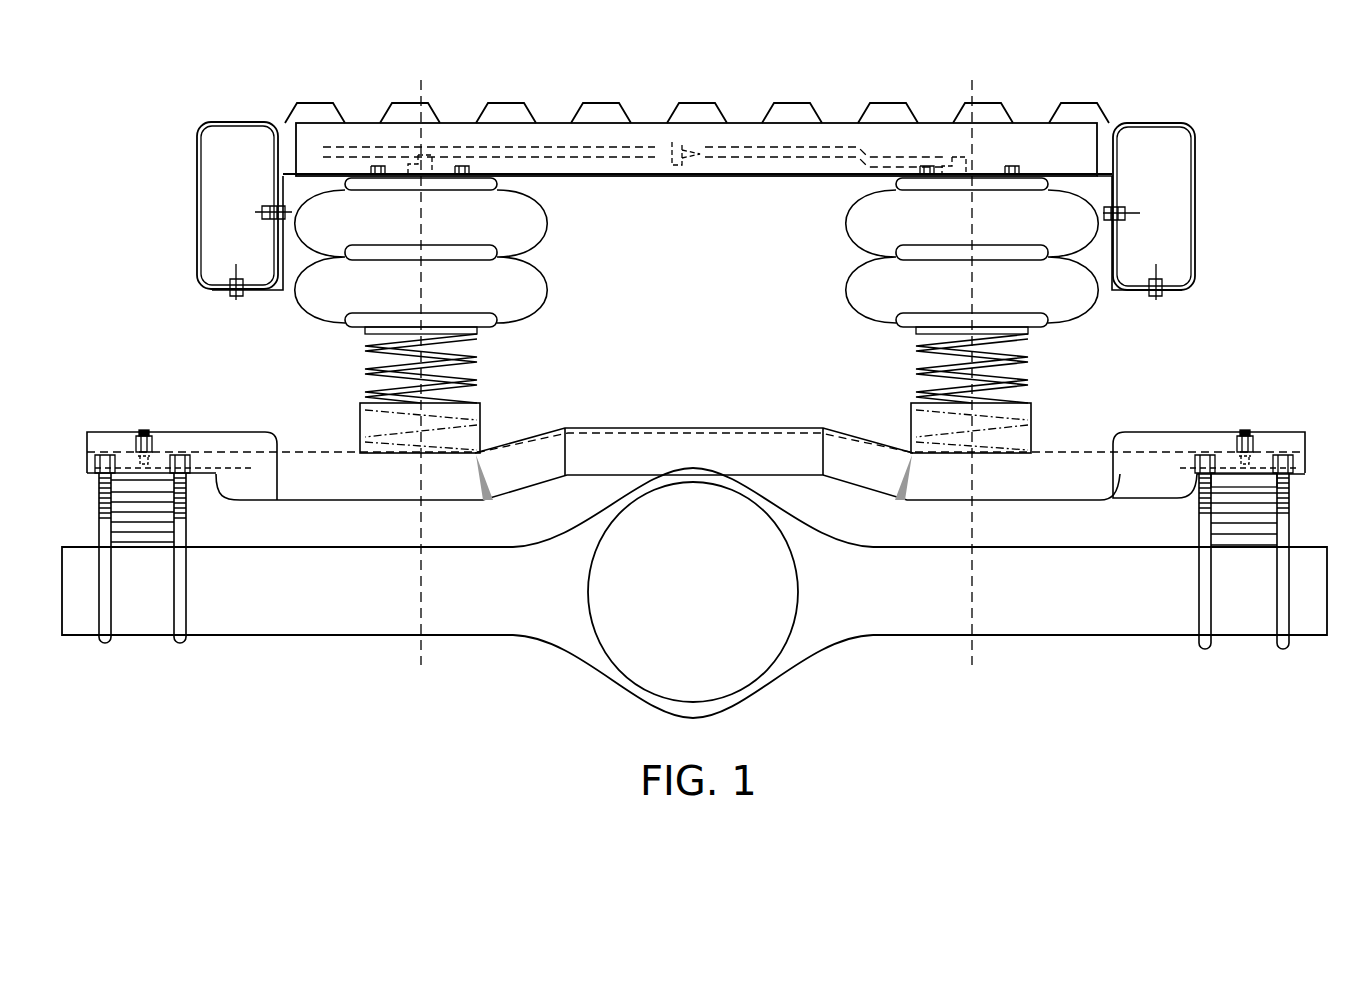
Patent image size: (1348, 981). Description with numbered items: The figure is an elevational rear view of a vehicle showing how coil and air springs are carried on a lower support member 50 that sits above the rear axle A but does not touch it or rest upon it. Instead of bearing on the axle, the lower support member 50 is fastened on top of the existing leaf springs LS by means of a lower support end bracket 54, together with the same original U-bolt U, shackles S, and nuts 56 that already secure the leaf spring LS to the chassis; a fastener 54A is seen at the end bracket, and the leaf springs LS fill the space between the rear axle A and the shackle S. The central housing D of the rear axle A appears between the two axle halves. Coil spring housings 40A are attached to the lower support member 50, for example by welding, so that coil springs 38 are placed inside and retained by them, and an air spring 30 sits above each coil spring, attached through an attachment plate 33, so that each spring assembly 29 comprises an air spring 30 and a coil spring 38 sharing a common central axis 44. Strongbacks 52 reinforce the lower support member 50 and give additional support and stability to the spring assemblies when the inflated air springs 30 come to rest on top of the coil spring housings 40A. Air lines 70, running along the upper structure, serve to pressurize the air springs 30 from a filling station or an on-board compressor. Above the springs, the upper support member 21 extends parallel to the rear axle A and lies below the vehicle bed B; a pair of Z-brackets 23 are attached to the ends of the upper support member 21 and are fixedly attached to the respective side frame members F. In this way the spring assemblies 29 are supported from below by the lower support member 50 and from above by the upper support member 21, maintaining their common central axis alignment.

The centerline of air spring 44 is at (421, 84).
The upper support member 21 is at (752, 178).
The vehicle bed B is at (690, 108).
The air lines 70 is at (805, 150).
The side frame members F is at (186, 202).
The Z-brackets 23 is at (255, 291).
The spring assemblies 29 is at (560, 292).
The air spring 30 is at (857, 222).
The attachment plate 33 is at (905, 322).
The coil springs 38 is at (1027, 385).
The coil spring housings 40A is at (1033, 428).
The lower support member 50 is at (873, 480).
The lower support end bracket 54 is at (128, 470).
The top plate bolt 54A is at (143, 430).
The nuts 56 is at (102, 455).
The strongbacks 52 is at (1218, 433).
The shackles S is at (1270, 480).
The leaf springs LS is at (120, 522).
The U-bolt U is at (105, 645).
The rear axle A is at (341, 604).
The differential housing D is at (705, 605).